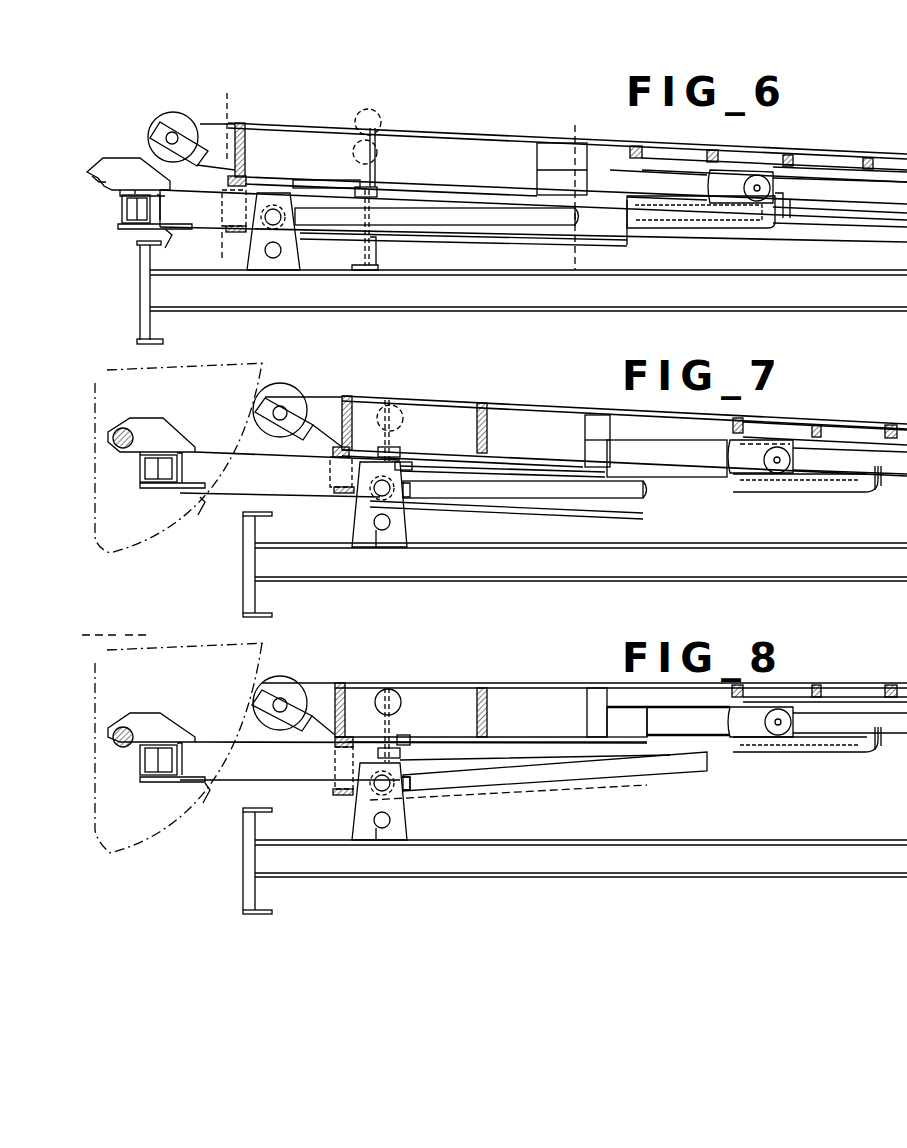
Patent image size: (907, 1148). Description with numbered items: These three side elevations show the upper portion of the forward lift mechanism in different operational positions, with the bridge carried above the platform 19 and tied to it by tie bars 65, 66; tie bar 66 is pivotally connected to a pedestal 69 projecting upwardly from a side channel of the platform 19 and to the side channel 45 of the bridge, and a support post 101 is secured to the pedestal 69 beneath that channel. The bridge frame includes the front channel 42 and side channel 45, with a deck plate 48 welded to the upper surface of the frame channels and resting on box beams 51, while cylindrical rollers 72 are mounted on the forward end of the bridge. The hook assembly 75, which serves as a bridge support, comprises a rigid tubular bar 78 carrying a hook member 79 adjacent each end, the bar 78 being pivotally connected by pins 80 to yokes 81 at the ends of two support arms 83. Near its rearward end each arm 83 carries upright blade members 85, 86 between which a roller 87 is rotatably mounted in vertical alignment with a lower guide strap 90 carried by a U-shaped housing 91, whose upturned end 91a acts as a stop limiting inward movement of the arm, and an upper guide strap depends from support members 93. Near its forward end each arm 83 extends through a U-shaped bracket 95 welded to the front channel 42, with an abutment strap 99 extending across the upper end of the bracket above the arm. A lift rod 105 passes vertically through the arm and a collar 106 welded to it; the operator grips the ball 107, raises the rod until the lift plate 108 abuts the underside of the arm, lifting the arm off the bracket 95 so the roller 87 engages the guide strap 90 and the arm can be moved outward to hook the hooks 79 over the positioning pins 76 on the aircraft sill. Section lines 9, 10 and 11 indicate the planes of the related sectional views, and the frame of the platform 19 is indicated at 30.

In FIG. 6, the section line 9- 9 is at (525, 122).
In FIG. 7, the section line 9- 9 is at (899, 469).
In FIG. 8, the section line 9- 9 is at (899, 759).
In FIG. 6, the section line 10- 10 is at (180, 105).
In FIG. 7, the section line 11- 11 is at (100, 575).
In FIG. 6, the platform 19 is at (512, 311).
In FIG. 7, the platform 19 is at (578, 583).
In FIG. 8, the platform 19 is at (378, 879).
In FIG. 6, the support frame 30 is at (138, 284).
In FIG. 7, the support frame 30 is at (243, 556).
In FIG. 8, the support frame 30 is at (243, 858).
In FIG. 6, the front channel 42 is at (245, 134).
In FIG. 7, the front channel 42 is at (347, 396).
In FIG. 8, the front channel 42 is at (340, 710).
In FIG. 7, the side channel 45 is at (494, 415).
In FIG. 8, the side channel 45 is at (494, 697).
In FIG. 6, the deck plate 48 is at (834, 152).
In FIG. 7, the deck plate 48 is at (596, 408).
In FIG. 8, the deck plate 48 is at (607, 683).
In FIG. 6, the box beam 51 is at (535, 157).
In FIG. 7, the box beam 51 is at (588, 426).
In FIG. 8, the box beam 51 is at (600, 702).
In FIG. 6, the tie bar 65 is at (731, 230).
In FIG. 6, the tie bar 66 is at (486, 228).
In FIG. 7, the tie bar 66 is at (706, 500).
In FIG. 8, the tie bar 66 is at (700, 773).
In FIG. 6, the pedestal 69 is at (292, 253).
In FIG. 7, the pedestal 69 is at (360, 522).
In FIG. 8, the pedestal 69 is at (360, 812).
In FIG. 6, the cylindrical roller 72 is at (165, 113).
In FIG. 7, the cylindrical roller 72 is at (268, 392).
In FIG. 8, the cylindrical roller 72 is at (268, 682).
In FIG. 6, the hook assembly 75 is at (91, 155).
In FIG. 7, the hook assembly 75 is at (151, 418).
In FIG. 8, the hook assembly 75 is at (150, 710).
In FIG. 7, the positioning pin 76 is at (120, 447).
In FIG. 8, the positioning pin 76 is at (120, 748).
In FIG. 6, the tubular bar 78 is at (118, 226).
In FIG. 7, the tubular bar 78 is at (145, 484).
In FIG. 8, the tubular bar 78 is at (147, 781).
In FIG. 6, the hook member 79 is at (120, 157).
In FIG. 7, the hook member 79 is at (124, 426).
In FIG. 8, the hook member 79 is at (170, 720).
In FIG. 6, the pin 80 is at (120, 212).
In FIG. 7, the pin 80 is at (150, 486).
In FIG. 8, the pin 80 is at (157, 786).
In FIG. 6, the yoke 81 is at (179, 249).
In FIG. 7, the yoke 81 is at (187, 516).
In FIG. 8, the yoke 81 is at (196, 803).
In FIG. 6, the support arm 83 is at (205, 215).
In FIG. 7, the support arm 83 is at (249, 487).
In FIG. 8, the support arm 83 is at (259, 772).
In FIG. 6, the blade member 85 is at (728, 178).
In FIG. 7, the blade member 85 is at (727, 445).
In FIG. 8, the blade member 85 is at (761, 732).
In FIG. 6, the blade member 86 is at (668, 197).
In FIG. 7, the blade member 86 is at (674, 467).
In FIG. 8, the blade member 86 is at (669, 730).
In FIG. 6, the roller 87 is at (770, 188).
In FIG. 7, the roller 87 is at (792, 462).
In FIG. 8, the roller 87 is at (792, 723).
In FIG. 6, the lower guide strap 90 is at (647, 220).
In FIG. 7, the lower guide strap 90 is at (796, 484).
In FIG. 8, the lower guide strap 90 is at (796, 745).
In FIG. 6, the housing 91 is at (715, 226).
In FIG. 7, the housing 91 is at (862, 490).
In FIG. 8, the housing 91 is at (840, 753).
In FIG. 6, the upturned end 91a is at (782, 206).
In FIG. 6, the support member 93 is at (640, 148).
In FIG. 7, the support member 93 is at (825, 428).
In FIG. 8, the support member 93 is at (814, 691).
In FIG. 6, the bracket 95 is at (258, 176).
In FIG. 7, the bracket 95 is at (333, 490).
In FIG. 8, the bracket 95 is at (333, 792).
In FIG. 6, the abutment strap 99 is at (240, 172).
In FIG. 7, the abutment strap 99 is at (334, 452).
In FIG. 8, the abutment strap 99 is at (335, 742).
In FIG. 6, the support post 101 is at (298, 178).
In FIG. 7, the support post 101 is at (400, 449).
In FIG. 8, the support post 101 is at (400, 753).
In FIG. 6, the lift rod 105 is at (380, 158).
In FIG. 7, the lift rod 105 is at (405, 433).
In FIG. 8, the lift rod 105 is at (408, 796).
In FIG. 6, the collar 106 is at (355, 190).
In FIG. 7, the collar 106 is at (404, 468).
In FIG. 8, the collar 106 is at (404, 737).
In FIG. 6, the ball 107 is at (378, 120).
In FIG. 7, the ball 107 is at (396, 408).
In FIG. 8, the ball 107 is at (402, 703).
In FIG. 6, the lift plate 108 is at (378, 252).
In FIG. 7, the lift plate 108 is at (410, 527).
In FIG. 8, the lift plate 108 is at (408, 823).